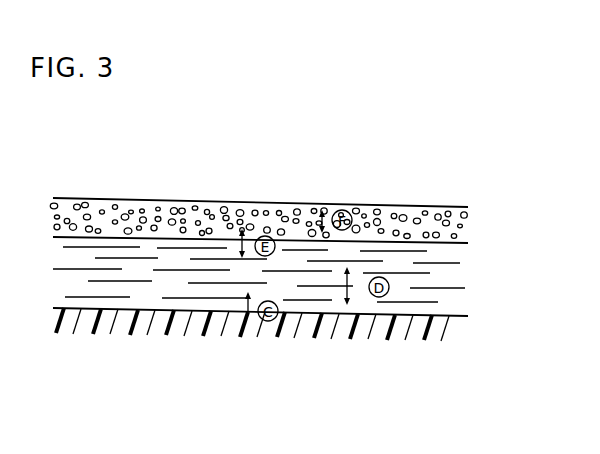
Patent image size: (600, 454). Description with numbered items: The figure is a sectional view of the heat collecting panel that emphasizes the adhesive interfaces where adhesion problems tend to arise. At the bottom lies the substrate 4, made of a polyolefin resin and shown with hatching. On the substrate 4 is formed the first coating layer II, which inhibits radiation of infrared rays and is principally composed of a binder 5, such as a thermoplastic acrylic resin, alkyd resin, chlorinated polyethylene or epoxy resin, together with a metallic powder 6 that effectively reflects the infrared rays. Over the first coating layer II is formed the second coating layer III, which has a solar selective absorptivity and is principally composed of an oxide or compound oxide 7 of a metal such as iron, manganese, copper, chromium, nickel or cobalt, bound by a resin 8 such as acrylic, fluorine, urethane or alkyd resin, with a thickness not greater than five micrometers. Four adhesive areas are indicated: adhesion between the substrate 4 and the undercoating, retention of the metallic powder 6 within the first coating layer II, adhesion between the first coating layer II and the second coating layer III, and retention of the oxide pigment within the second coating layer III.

The substrate 4 is at (443, 332).
The binder 5 is at (458, 303).
The metallic powder 6 is at (450, 263).
The oxide or compound oxide 7 is at (423, 212).
The resin 8 is at (410, 210).
The first coating layer II is at (309, 285).
The second coating layer III is at (294, 190).